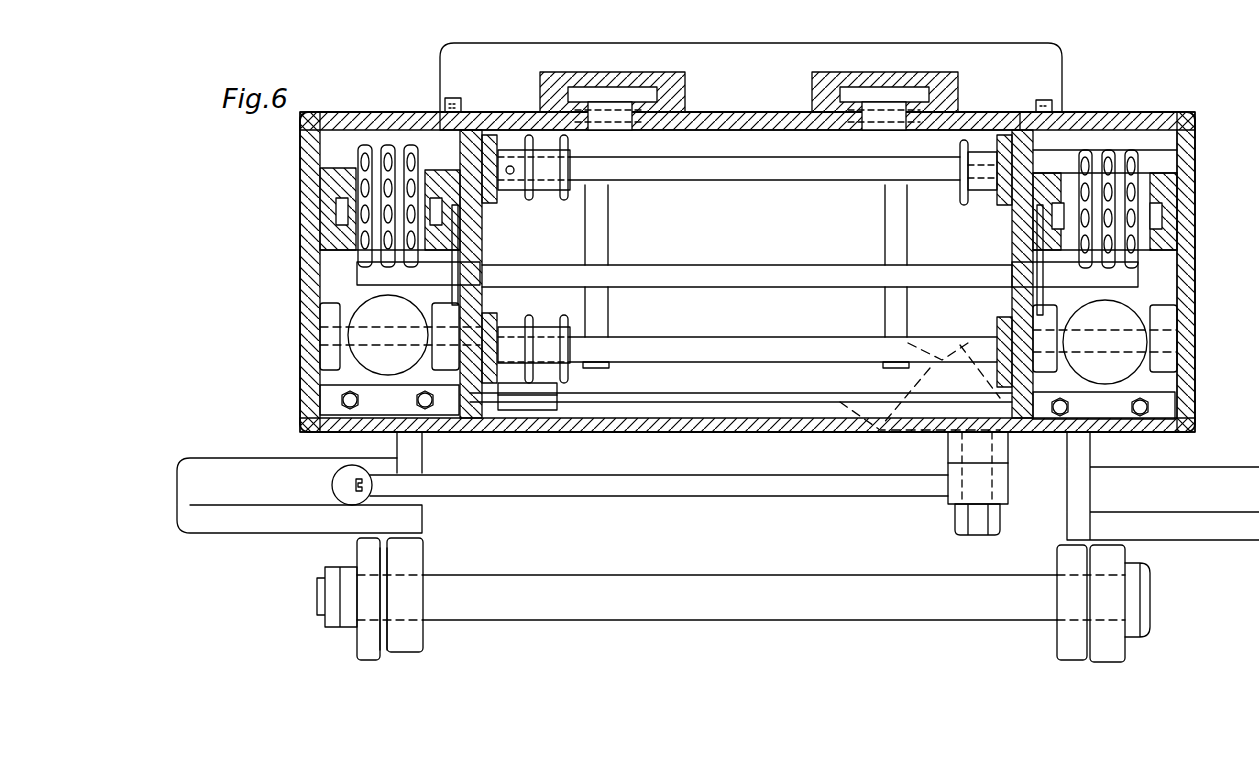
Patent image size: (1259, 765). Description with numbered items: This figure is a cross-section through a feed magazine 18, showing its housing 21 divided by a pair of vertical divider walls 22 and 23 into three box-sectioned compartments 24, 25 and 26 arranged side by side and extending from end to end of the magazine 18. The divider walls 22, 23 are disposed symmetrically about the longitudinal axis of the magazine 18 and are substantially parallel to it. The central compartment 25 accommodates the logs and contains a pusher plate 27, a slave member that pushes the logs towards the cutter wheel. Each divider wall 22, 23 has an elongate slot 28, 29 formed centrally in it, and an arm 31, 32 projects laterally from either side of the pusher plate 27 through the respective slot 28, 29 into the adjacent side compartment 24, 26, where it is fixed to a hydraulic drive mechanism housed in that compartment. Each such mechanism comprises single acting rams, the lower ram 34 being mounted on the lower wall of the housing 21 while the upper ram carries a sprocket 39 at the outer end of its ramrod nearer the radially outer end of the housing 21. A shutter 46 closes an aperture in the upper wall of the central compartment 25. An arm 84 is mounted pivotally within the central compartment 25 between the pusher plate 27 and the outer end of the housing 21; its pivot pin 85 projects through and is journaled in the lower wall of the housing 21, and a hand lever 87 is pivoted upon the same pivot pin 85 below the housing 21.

The feed magazine 18 is at (1112, 112).
The housing 21 is at (1190, 145).
The vertical divider wall 22 is at (466, 150).
The vertical divider wall 23 is at (1030, 160).
The side compartment 24 is at (340, 285).
The central compartment 25 is at (703, 143).
The side compartment 26 is at (1160, 160).
The pusher plate 27 is at (778, 231).
The elongate slot 28 is at (482, 262).
The elongate slot 29 is at (1012, 295).
The arm 31 is at (360, 270).
The arm 32 is at (1140, 283).
The hydraulic ram 34 is at (355, 322).
The sprocket 39 is at (370, 178).
The shutter 46 is at (760, 118).
The arm 84 is at (700, 395).
The pivot pin 85 is at (948, 500).
The hand lever 87 is at (570, 485).